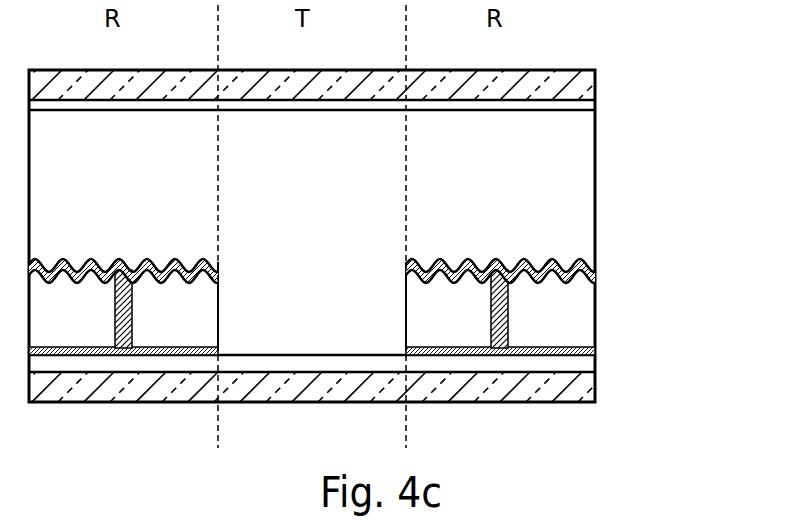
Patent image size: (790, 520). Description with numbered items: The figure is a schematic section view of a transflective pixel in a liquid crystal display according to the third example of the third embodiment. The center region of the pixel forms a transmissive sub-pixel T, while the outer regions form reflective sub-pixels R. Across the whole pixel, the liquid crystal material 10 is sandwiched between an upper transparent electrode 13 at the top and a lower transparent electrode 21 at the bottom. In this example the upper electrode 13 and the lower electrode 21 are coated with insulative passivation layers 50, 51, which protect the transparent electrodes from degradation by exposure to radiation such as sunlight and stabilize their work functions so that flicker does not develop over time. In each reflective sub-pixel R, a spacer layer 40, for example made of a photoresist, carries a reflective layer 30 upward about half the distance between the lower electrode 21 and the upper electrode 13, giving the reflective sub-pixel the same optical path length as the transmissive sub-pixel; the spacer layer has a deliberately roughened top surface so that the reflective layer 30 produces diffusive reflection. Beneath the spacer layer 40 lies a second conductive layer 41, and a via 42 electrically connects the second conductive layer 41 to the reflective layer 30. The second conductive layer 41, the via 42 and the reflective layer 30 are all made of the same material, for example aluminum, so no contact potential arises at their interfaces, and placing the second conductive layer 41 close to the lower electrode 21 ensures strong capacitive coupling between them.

The liquid crystal material 10 is at (583, 198).
The upper transparent electrode 13 is at (595, 87).
The lower transparent electrode 21 is at (577, 403).
The reflective layer 30 is at (595, 273).
The spacer layer 40 is at (580, 322).
The second conductive layer 41 is at (595, 348).
The via 42 is at (508, 293).
The insulative passivation layer 50 is at (595, 107).
The insulative passivation layer 51 is at (583, 362).